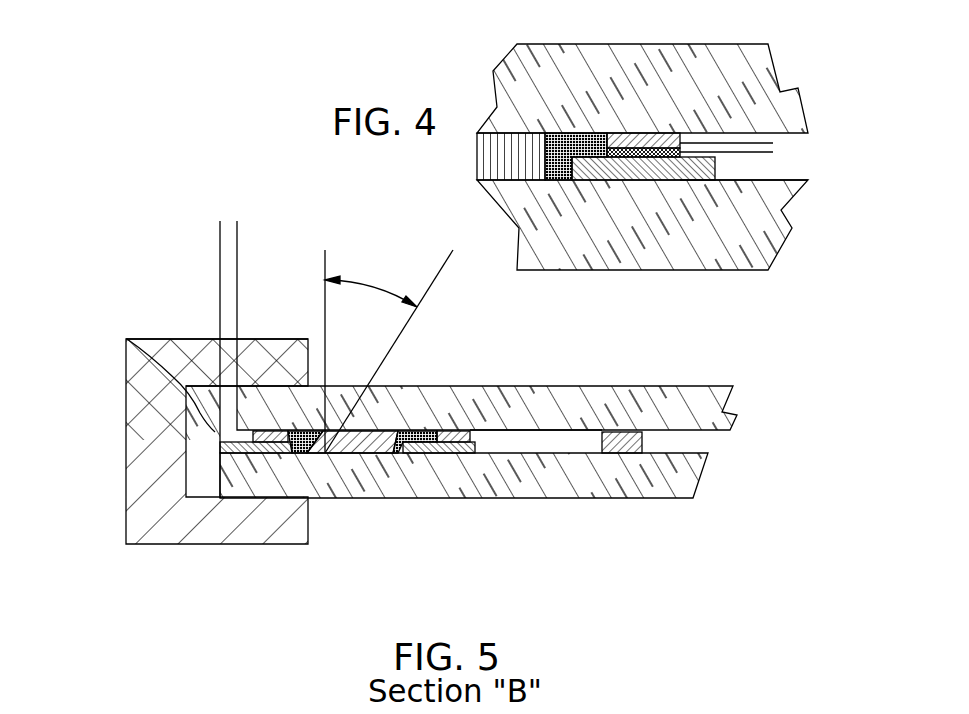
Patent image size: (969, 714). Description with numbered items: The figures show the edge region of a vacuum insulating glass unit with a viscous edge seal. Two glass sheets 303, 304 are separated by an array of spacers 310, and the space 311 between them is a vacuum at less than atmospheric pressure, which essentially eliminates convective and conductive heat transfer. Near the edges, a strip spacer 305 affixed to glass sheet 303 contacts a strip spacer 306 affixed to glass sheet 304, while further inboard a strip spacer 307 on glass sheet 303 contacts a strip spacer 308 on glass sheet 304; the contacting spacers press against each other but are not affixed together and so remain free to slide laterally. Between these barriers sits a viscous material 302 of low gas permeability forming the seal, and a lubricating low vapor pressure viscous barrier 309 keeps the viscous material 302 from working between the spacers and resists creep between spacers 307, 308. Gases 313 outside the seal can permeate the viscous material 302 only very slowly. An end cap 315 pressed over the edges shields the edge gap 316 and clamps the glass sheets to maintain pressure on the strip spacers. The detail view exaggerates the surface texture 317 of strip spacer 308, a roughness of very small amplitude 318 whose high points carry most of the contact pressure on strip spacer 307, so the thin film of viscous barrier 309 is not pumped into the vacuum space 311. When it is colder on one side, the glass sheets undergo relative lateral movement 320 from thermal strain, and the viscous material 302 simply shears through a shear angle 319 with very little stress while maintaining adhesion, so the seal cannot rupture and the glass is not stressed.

In FIG. 4, the viscous material 302 is at (490, 121).
In FIG. 5, the viscous material 302 is at (358, 430).
In FIG. 4, the glass sheet 303 is at (642, 246).
In FIG. 5, the glass sheet 303 is at (464, 506).
In FIG. 4, the glass sheet 304 is at (642, 67).
In FIG. 5, the glass sheet 304 is at (602, 386).
In FIG. 5, the strip spacer 305 is at (220, 453).
In FIG. 5, the strip spacer 306 is at (268, 425).
In FIG. 4, the strip spacer 307 is at (613, 181).
In FIG. 5, the strip spacer 307 is at (427, 453).
In FIG. 4, the strip spacer 308 is at (625, 132).
In FIG. 5, the strip spacer 308 is at (423, 430).
In FIG. 4, the viscous barrier 309 is at (588, 132).
In FIG. 5, the viscous barrier 309 is at (398, 453).
In FIG. 5, the spacer 310 is at (600, 435).
In FIG. 4, the vacuum space 311 is at (783, 173).
In FIG. 5, the vacuum space 311 is at (513, 435).
In FIG. 5, the gases 313 is at (220, 442).
In FIG. 5, the end cap 315 is at (207, 310).
In FIG. 5, the edge gap 316 is at (127, 339).
In FIG. 4, the surface texture 317 is at (668, 153).
In FIG. 4, the amplitude 318 is at (748, 152).
In FIG. 5, the shear angle 319 is at (372, 286).
In FIG. 5, the relative lateral movement 320 is at (307, 240).